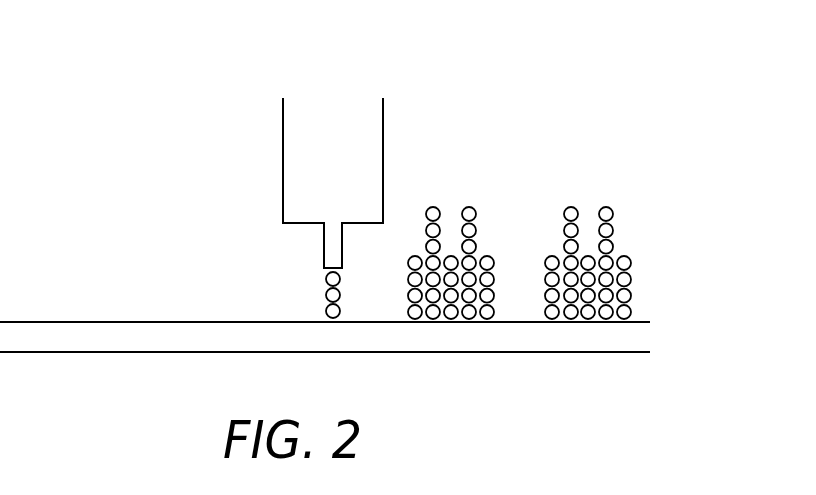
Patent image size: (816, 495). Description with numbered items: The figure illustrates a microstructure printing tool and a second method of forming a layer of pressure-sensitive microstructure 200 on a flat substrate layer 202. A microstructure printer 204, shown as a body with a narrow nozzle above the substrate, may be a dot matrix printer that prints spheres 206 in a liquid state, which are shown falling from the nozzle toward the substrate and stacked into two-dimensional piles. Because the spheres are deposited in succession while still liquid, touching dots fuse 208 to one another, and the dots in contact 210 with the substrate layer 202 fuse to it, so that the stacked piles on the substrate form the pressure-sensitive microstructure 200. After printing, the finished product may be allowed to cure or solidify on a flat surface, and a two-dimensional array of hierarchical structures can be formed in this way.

The pressure-sensitive microstructure 200 is at (514, 74).
The flat substrate layer 202 is at (20, 322).
The microstructure printer 204 is at (383, 128).
The spheres 206 is at (581, 277).
The fused touching dots 208 is at (630, 270).
The dots in contact with substrate 210 is at (632, 310).